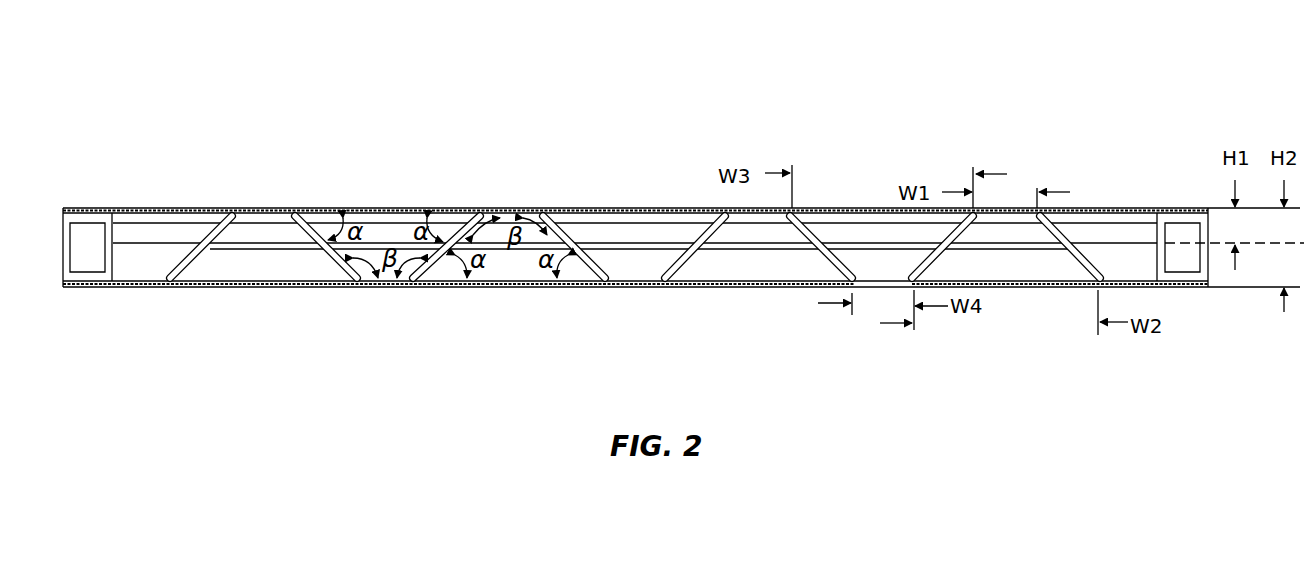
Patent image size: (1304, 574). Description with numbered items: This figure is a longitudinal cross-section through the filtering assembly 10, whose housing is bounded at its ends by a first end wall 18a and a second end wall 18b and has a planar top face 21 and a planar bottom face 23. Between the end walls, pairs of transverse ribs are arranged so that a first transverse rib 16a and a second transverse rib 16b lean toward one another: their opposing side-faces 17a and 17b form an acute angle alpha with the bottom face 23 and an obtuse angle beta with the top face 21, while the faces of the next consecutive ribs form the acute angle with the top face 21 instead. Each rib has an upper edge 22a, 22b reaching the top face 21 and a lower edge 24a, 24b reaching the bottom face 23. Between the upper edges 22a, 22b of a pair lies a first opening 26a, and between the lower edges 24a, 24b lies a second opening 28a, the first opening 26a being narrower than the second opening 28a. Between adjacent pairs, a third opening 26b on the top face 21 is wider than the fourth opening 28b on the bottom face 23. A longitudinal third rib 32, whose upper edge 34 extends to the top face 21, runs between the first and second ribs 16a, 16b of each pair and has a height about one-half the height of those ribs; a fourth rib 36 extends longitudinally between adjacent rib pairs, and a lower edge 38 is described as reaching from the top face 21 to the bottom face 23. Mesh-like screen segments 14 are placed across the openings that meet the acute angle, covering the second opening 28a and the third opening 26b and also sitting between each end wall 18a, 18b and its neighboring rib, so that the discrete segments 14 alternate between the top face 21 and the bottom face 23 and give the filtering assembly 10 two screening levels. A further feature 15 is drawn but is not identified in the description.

The filtering assembly 10 is at (1112, 94).
The screen segment 14 is at (148, 208).
The web 15 is at (745, 270).
The first transverse rib 16a is at (427, 248).
The second transverse rib 16b is at (603, 262).
The side-face of first rib 17a is at (208, 287).
The side-face of second rib 17b is at (281, 288).
The first end wall 18a is at (333, 213).
The second end wall 18b is at (62, 243).
The top face 21 is at (250, 213).
The upper edge of first rib 22a is at (232, 213).
The upper edge of second rib 22b is at (295, 213).
The bottom face 23 is at (382, 287).
The lower edge of first rib 24a is at (170, 283).
The lower edge of second rib 24b is at (357, 285).
The first opening 26a is at (268, 213).
The third opening 26b is at (372, 213).
The second opening 28a is at (240, 287).
The fourth opening 28b is at (395, 287).
The third rib 32 is at (1008, 208).
The upper edge of third rib 34 is at (672, 208).
The fourth rib 36 is at (840, 208).
The lower edge of fourth rib 38 is at (878, 290).